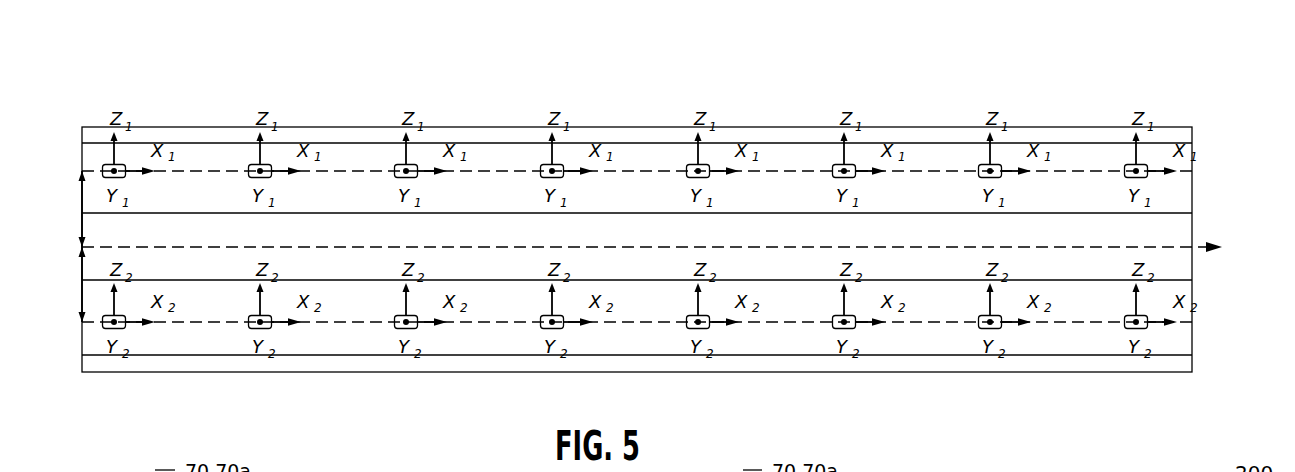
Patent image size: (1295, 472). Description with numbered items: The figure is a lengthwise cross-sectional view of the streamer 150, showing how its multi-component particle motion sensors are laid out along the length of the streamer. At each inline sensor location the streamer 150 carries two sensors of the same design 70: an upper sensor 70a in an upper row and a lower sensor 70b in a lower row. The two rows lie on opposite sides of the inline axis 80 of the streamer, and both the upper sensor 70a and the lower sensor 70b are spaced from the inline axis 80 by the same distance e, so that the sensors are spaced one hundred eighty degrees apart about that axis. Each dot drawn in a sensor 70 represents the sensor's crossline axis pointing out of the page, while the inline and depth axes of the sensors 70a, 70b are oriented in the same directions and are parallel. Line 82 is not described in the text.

The streamer 150 is at (1020, 90).
The reference line of the panel 82 is at (1163, 213).
The inline axis 80 is at (1201, 242).
The sensor 70 is at (650, 237).
The upper sensor 70a is at (122, 166).
The lower sensor 70b is at (120, 328).